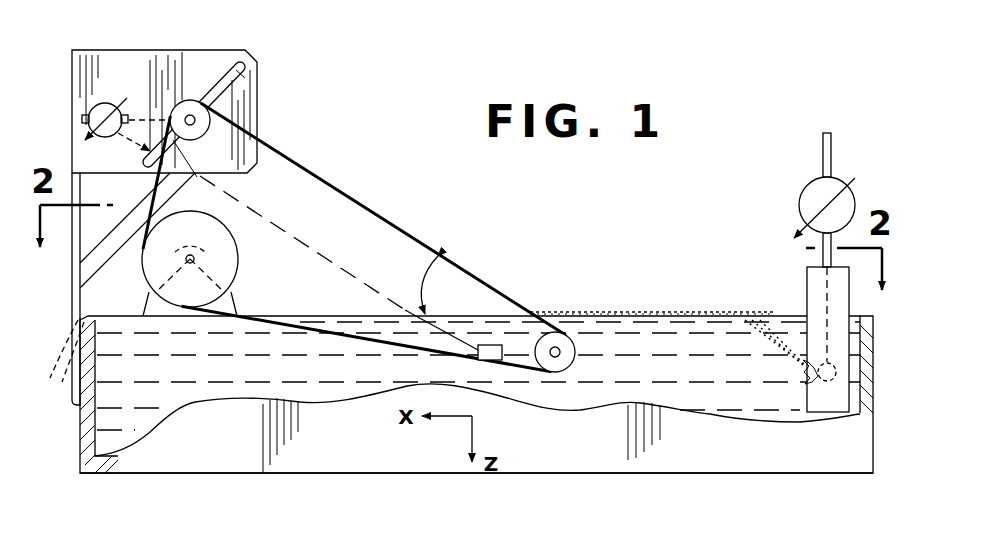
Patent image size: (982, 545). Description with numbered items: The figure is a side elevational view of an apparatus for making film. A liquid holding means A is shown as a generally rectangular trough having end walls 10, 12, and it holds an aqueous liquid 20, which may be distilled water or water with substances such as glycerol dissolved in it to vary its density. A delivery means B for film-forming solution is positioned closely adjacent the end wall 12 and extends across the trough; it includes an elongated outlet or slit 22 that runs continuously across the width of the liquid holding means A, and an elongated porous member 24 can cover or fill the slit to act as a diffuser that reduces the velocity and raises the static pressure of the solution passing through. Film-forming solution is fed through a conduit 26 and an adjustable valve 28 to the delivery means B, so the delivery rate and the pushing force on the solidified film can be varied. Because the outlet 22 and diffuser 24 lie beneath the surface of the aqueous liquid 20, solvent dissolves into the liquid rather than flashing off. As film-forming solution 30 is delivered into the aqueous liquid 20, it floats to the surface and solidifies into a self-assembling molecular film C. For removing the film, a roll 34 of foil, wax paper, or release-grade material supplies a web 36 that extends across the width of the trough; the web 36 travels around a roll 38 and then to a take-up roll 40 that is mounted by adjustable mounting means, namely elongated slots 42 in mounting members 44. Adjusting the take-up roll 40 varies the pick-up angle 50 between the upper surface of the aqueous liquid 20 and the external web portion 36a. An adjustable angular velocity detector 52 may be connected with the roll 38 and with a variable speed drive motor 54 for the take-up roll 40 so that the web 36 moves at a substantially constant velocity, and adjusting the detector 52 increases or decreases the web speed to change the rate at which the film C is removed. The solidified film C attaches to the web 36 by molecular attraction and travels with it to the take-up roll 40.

The end wall 10 is at (80, 452).
The end wall 12 is at (876, 397).
The aqueous liquid 20 is at (167, 393).
The outlet or slit 22 is at (808, 385).
The porous member 24 is at (805, 374).
The conduit 26 is at (823, 152).
The adjustable valve 28 is at (800, 197).
The film-forming solution 30 is at (773, 317).
The roll 34 is at (240, 261).
The web 36 is at (349, 339).
The external web portion 36a is at (344, 192).
The roll 38 is at (567, 334).
The take-up roll 40 is at (196, 100).
The elongated slots 42 is at (240, 83).
The mounting members 44 is at (233, 61).
The pick-up angle 50 is at (430, 270).
The adjustable angular velocity detector 52 is at (468, 353).
The variable speed drive motor 54 is at (110, 102).
The liquid holding means A is at (260, 474).
The delivery means B is at (805, 271).
The self-assembling molecular film C is at (657, 308).